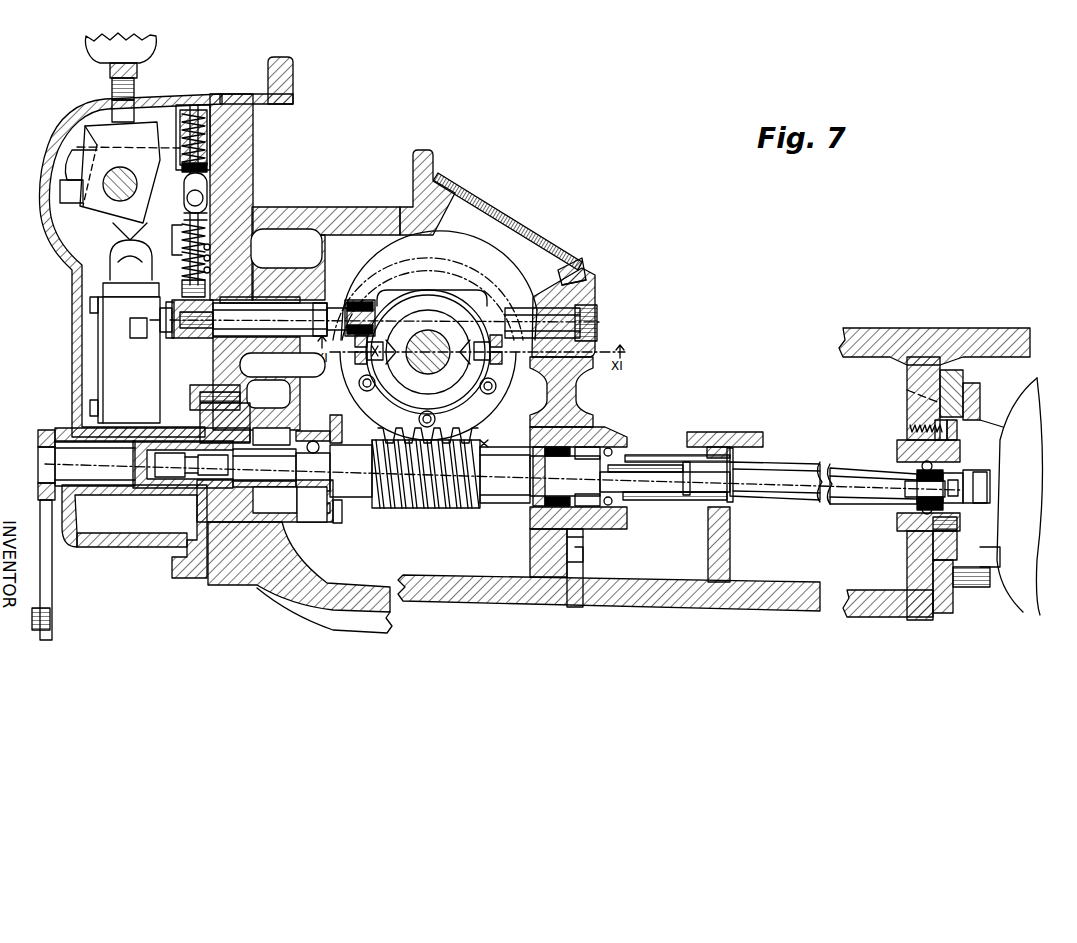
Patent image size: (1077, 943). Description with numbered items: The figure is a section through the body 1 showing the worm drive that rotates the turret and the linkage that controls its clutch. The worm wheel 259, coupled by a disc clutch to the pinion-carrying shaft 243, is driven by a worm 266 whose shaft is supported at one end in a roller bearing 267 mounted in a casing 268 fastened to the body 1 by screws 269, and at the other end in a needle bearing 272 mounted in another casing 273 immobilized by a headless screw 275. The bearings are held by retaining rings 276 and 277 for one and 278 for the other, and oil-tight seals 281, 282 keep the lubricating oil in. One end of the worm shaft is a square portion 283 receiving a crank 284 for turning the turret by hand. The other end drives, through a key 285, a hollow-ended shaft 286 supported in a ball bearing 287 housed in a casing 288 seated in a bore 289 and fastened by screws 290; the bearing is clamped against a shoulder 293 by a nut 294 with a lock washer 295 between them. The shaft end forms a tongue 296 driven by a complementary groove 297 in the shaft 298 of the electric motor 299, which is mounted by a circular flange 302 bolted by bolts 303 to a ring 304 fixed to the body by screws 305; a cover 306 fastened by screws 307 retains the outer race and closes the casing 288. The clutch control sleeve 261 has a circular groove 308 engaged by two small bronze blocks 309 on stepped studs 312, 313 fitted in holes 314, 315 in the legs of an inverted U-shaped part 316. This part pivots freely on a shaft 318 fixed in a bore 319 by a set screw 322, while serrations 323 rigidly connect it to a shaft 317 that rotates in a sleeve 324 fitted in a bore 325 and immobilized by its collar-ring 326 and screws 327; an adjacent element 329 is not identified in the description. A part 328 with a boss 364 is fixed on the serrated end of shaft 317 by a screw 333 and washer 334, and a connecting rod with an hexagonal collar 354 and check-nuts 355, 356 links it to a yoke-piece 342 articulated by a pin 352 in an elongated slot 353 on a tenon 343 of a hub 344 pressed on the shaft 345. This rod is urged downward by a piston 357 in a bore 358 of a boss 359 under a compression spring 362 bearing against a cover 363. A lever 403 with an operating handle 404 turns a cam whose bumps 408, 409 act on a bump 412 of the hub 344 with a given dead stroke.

The body 1 is at (293, 95).
The shaft 243 is at (433, 373).
The worm wheel 259 is at (484, 426).
The control sleeve 261 is at (440, 318).
The worm 266 is at (430, 507).
The roller bearing 267 is at (338, 514).
The casing 268 is at (287, 513).
The screws 269 is at (245, 390).
The needle bearing 272 is at (530, 507).
The casing 273 is at (597, 428).
The headless screw 275 is at (583, 548).
The retaining ring 276 is at (332, 434).
The retaining ring 277 is at (292, 494).
The retaining ring 278 is at (532, 442).
The oil-tight seal 281 is at (256, 443).
The oil-tight seal 282 is at (612, 432).
The square portion 283 is at (205, 473).
The crank 284 is at (48, 580).
The key 285 is at (640, 463).
The shaft 286 is at (767, 475).
The ball bearing 287 is at (897, 504).
The casing 288 is at (897, 517).
The bore 289 is at (898, 440).
The screws 290 is at (982, 413).
The shoulder 293 is at (912, 478).
The nut 294 is at (957, 440).
The lock washer 295 is at (958, 428).
The tongue 296 is at (960, 500).
The groove 297 is at (968, 472).
The motor shaft 298 is at (970, 500).
The electric motor 299 is at (1032, 598).
The circular flange 302 is at (990, 598).
The bolts 303 is at (958, 595).
The ring 304 is at (965, 372).
The screws 305 is at (912, 384).
The cover 306 is at (957, 522).
The screws 307 is at (933, 542).
The circular groove 308 is at (458, 312).
The bronze blocks 309 is at (472, 347).
The stepped stud 312 is at (392, 345).
The stepped stud 313 is at (445, 360).
The hole 314 is at (355, 362).
The hole 315 is at (515, 368).
The inverted U-shaped part 316 is at (430, 287).
The shaft 317 is at (312, 308).
The shaft 318 is at (540, 320).
The bore 319 is at (590, 296).
The set screw 322 is at (600, 327).
The longitudinal serrations 323 is at (357, 300).
The sleeve 324 is at (298, 318).
The bore 325 is at (270, 300).
The collar-ring 326 is at (215, 356).
The screws 327 is at (213, 373).
The part 328 is at (170, 338).
The plug 329 is at (182, 282).
The screw 333 is at (172, 324).
The washer 334 is at (172, 332).
The yoke-piece 342 is at (207, 212).
The tenon 343 is at (158, 218).
The hub 344 is at (62, 238).
The shaft 345 is at (112, 192).
The pin 352 is at (205, 194).
The elongated slot 353 is at (207, 180).
The hexagonal collar 354 is at (180, 260).
The check-nut 355 is at (212, 262).
The check-nut 356 is at (212, 248).
The piston 357 is at (207, 152).
The bore 358 is at (190, 102).
The boss 359 is at (184, 162).
The compression spring 362 is at (207, 127).
The cover 363 is at (205, 120).
The boss 364 is at (192, 344).
The lever 403 is at (110, 88).
The operating handle 404 is at (100, 50).
The bump 408 is at (95, 125).
The bump 409 is at (60, 188).
The bump 412 is at (70, 160).